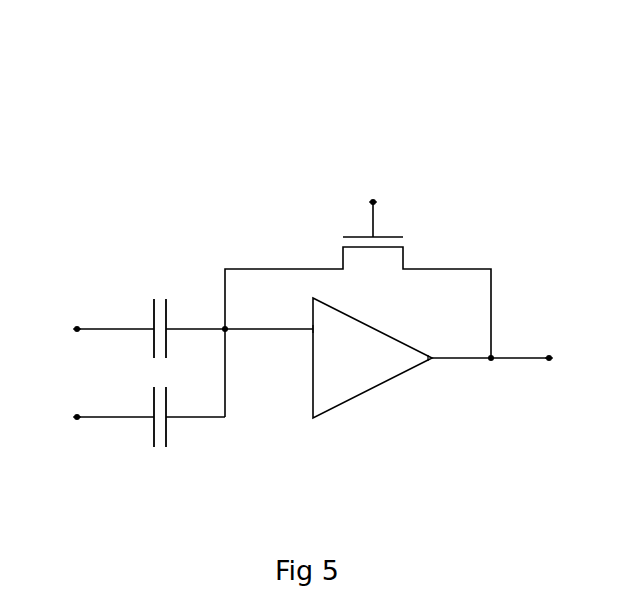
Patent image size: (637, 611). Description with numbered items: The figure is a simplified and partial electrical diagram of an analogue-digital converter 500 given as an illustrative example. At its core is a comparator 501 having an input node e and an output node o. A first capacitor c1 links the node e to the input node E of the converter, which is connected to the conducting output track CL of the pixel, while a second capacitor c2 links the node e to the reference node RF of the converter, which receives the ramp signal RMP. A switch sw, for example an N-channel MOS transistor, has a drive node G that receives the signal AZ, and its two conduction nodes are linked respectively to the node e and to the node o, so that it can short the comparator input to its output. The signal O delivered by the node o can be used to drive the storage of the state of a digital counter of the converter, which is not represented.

The analogue-digital converter 500 is at (486, 62).
The comparator 501 is at (363, 396).
The first capacitor c1 is at (167, 300).
The second capacitor c2 is at (167, 432).
The switch sw is at (352, 236).
The input node e is at (312, 331).
The output node o is at (432, 357).
The signal O is at (550, 357).